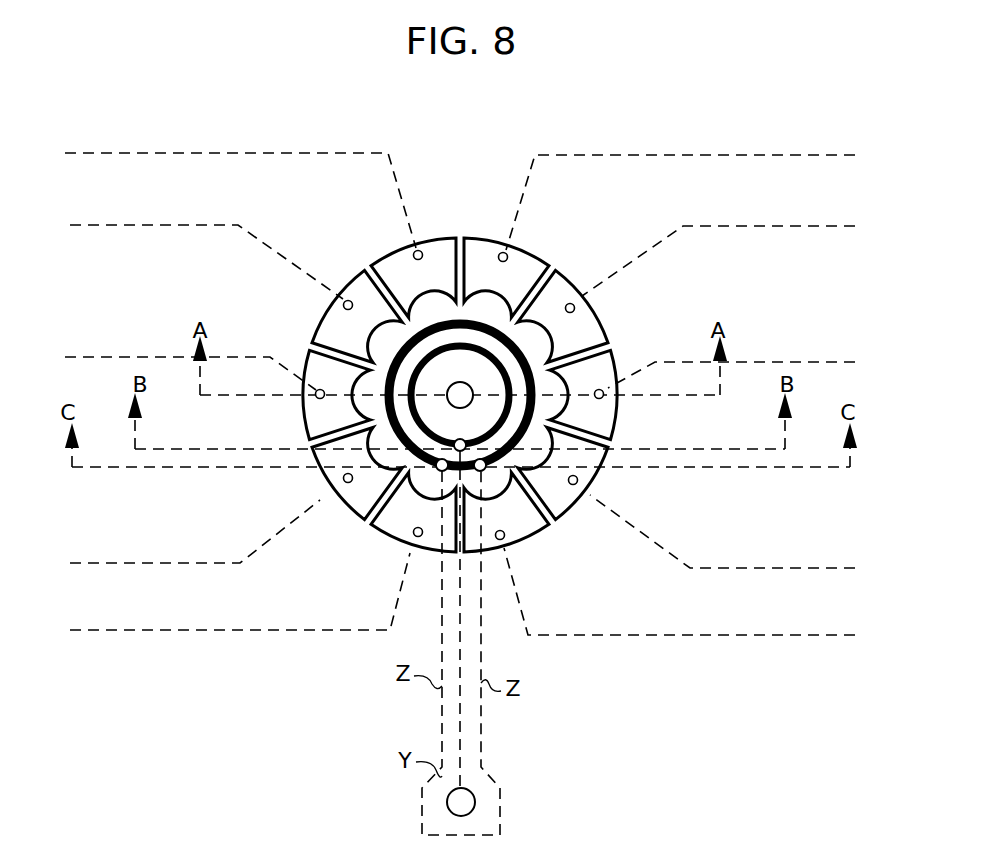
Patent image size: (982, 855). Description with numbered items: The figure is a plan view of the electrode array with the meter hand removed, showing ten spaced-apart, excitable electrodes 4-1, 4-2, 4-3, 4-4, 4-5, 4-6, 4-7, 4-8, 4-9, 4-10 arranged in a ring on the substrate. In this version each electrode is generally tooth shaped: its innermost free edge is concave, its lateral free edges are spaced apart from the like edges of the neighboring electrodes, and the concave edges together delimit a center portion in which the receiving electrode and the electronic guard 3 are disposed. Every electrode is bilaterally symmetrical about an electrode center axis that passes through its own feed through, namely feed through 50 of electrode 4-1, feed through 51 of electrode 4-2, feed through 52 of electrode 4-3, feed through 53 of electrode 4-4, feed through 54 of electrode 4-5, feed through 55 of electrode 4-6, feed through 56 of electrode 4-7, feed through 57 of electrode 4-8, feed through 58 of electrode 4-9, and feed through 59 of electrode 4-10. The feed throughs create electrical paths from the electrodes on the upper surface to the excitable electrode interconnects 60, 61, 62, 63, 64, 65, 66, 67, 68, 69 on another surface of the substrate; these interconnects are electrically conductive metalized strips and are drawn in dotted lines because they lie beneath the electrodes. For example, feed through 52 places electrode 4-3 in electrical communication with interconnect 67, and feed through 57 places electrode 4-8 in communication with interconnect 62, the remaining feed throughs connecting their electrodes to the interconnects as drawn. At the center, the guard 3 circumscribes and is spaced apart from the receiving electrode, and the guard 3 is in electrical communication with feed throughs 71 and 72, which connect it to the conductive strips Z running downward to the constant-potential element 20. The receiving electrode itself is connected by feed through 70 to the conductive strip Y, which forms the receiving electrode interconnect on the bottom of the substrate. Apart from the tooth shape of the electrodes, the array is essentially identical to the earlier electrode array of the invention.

The guard 3 is at (408, 470).
The element of constant potential 20 is at (476, 802).
The excitable electrode 4-1 is at (470, 282).
The excitable electrode 4-2 is at (558, 344).
The excitable electrode 4-3 is at (574, 429).
The excitable electrode 4-4 is at (600, 481).
The excitable electrode 4-5 is at (496, 527).
The excitable electrode 4-6 is at (393, 534).
The excitable electrode 4-7 is at (334, 491).
The excitable electrode 4-8 is at (346, 427).
The excitable electrode 4-9 is at (352, 350).
The excitable electrode 4-10 is at (447, 284).
The feed through 50 is at (503, 252).
The feed through 51 is at (574, 304).
The feed through 52 is at (602, 390).
The feed through 53 is at (574, 485).
The feed through 54 is at (504, 538).
The feed through 55 is at (419, 537).
The feed through 56 is at (346, 483).
The feed through 57 is at (317, 390).
The feed through 58 is at (346, 301).
The feed through 59 is at (419, 250).
The excitable electrode interconnect 60 is at (223, 194).
The excitable electrode interconnect 61 is at (191, 256).
The excitable electrode interconnect 62 is at (175, 367).
The excitable electrode interconnect 63 is at (177, 538).
The excitable electrode interconnect 64 is at (222, 598).
The excitable electrode interconnect 65 is at (696, 598).
The excitable electrode interconnect 66 is at (739, 538).
The excitable electrode interconnect 67 is at (747, 369).
The excitable electrode interconnect 68 is at (734, 255).
The excitable electrode interconnect 69 is at (696, 196).
The feed through 70 is at (456, 439).
The feed through 71 is at (481, 458).
The feed through 72 is at (439, 459).